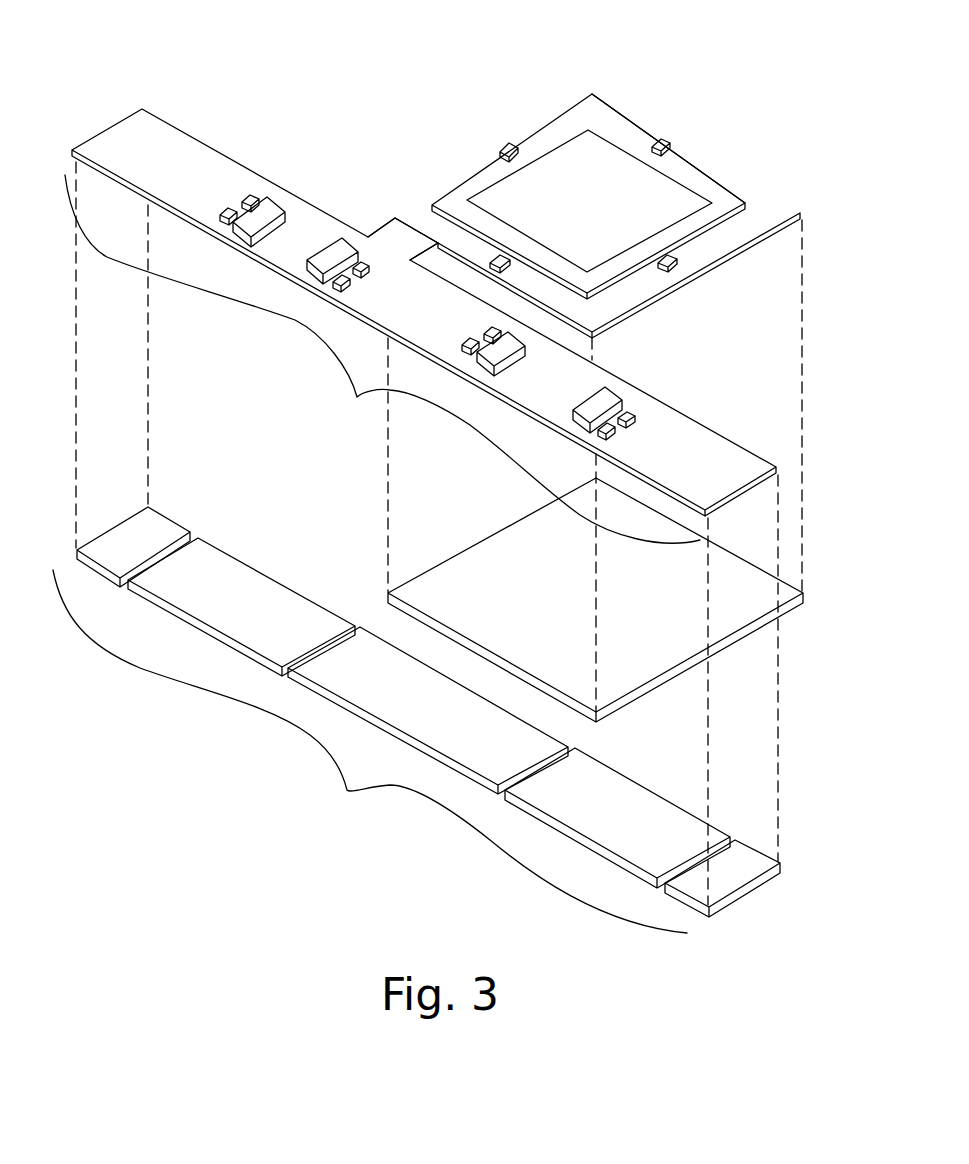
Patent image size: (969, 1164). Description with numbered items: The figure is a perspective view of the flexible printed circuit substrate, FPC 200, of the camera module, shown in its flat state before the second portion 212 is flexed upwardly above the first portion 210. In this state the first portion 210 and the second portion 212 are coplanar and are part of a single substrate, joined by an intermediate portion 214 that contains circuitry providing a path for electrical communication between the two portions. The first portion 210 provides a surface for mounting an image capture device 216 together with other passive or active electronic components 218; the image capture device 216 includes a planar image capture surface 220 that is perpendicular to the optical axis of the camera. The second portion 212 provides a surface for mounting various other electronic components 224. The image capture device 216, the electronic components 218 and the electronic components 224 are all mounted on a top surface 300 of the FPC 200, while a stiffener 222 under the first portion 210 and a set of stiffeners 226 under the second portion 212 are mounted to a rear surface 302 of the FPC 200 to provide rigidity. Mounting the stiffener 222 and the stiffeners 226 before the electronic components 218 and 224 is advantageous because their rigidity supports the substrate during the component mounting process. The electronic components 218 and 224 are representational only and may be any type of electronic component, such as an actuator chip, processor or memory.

The FPC 200 is at (243, 104).
The first portion 210 is at (783, 181).
The second portion 212 is at (420, 326).
The intermediate portion 214 is at (385, 241).
The image capture device 216 is at (588, 125).
The electronic components 218 is at (507, 145).
The image capture surface 220 is at (580, 223).
The stiffener 222 is at (484, 568).
The electronic components 224 is at (262, 243).
The stiffeners 226 is at (416, 720).
The top surface 300 is at (426, 207).
The rear surface 302 is at (640, 312).